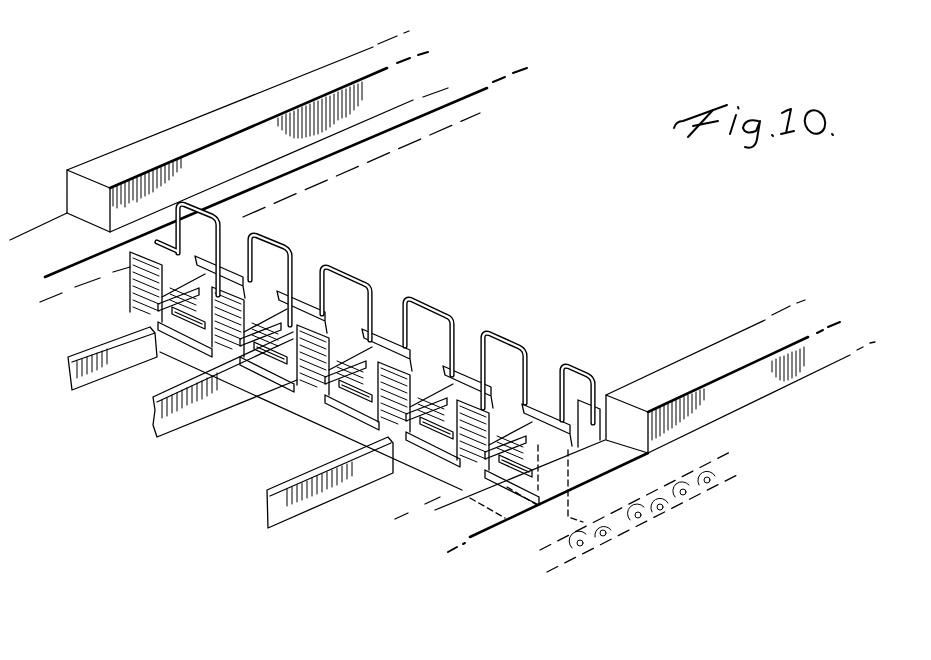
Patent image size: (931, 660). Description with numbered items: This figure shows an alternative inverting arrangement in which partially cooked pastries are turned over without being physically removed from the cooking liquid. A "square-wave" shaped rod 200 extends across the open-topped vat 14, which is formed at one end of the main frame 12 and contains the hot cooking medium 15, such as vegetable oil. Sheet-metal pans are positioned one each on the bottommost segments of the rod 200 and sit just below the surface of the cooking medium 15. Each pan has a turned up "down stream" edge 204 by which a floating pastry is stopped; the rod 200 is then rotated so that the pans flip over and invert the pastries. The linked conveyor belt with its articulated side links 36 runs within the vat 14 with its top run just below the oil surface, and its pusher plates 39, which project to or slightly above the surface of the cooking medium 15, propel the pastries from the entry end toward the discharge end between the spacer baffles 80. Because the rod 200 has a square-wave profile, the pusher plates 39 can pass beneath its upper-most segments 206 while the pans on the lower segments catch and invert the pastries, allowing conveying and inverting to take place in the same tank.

The main frame 12 is at (507, 532).
The open-topped vat 14 is at (420, 493).
The hot cooking medium 15 is at (413, 143).
The articulated side links 36 is at (648, 515).
The pusher plates 39 is at (313, 412).
The spacer baffles 80 is at (103, 375).
The square-wave shaped rod 200 is at (578, 378).
The turned up down stream edges 204 is at (396, 292).
The upper-most segments 206 is at (275, 241).